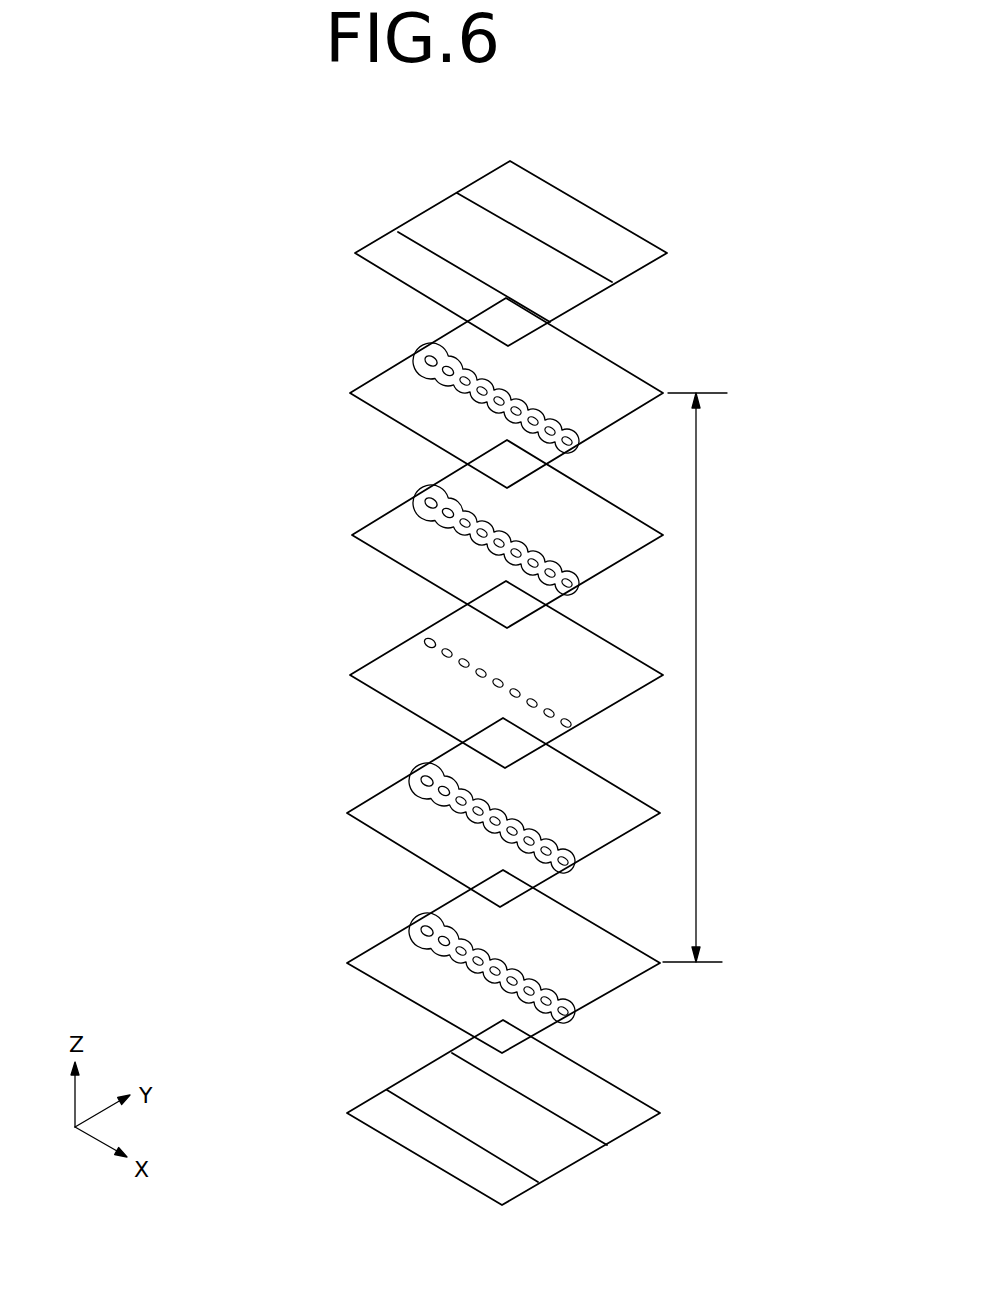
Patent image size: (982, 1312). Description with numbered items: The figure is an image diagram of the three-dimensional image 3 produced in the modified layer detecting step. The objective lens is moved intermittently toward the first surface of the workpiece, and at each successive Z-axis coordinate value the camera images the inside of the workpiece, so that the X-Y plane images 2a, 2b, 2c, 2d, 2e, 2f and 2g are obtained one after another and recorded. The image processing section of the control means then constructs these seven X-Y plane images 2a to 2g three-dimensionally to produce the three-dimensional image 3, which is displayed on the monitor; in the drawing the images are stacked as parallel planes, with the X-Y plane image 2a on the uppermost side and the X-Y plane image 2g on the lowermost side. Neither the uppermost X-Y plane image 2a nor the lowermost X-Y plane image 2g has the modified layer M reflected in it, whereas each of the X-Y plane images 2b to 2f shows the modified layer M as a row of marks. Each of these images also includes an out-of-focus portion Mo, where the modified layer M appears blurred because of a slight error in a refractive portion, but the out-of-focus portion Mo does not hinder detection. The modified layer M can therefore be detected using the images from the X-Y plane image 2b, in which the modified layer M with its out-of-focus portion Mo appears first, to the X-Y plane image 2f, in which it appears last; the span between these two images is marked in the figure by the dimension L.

The X-Y plane image 2a is at (619, 240).
The X-Y plane image 2b is at (611, 375).
The X-Y plane image 2c is at (610, 518).
The X-Y plane image 2d is at (610, 660).
The X-Y plane image 2e is at (607, 802).
The X-Y plane image 2f is at (597, 943).
The X-Y plane image 2g is at (602, 1097).
The three-dimensional image 3 is at (290, 162).
The modified layer M is at (430, 341).
The out-of-focus portion Mo is at (430, 380).
The length L is at (695, 677).